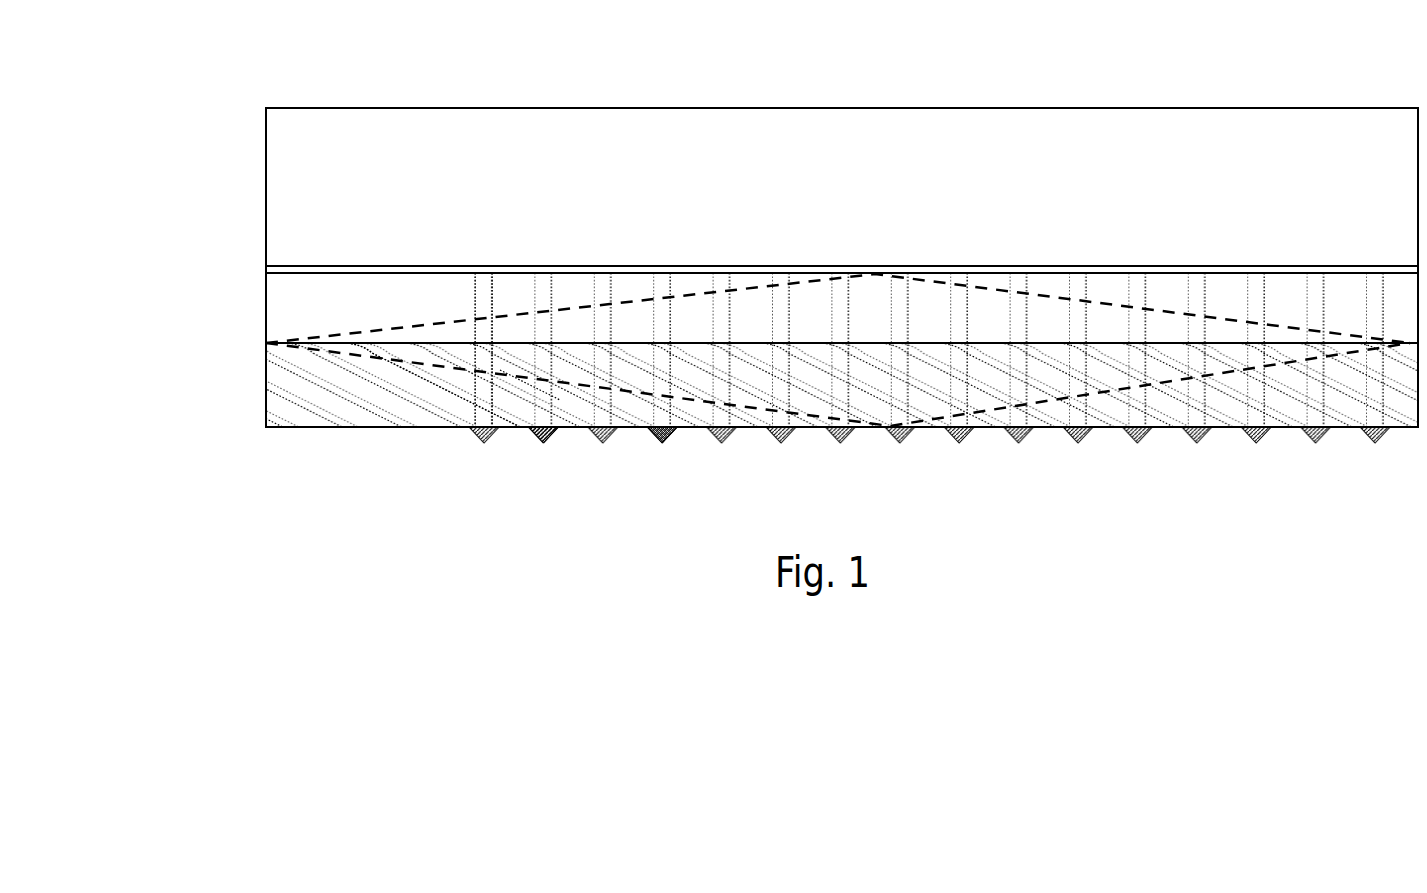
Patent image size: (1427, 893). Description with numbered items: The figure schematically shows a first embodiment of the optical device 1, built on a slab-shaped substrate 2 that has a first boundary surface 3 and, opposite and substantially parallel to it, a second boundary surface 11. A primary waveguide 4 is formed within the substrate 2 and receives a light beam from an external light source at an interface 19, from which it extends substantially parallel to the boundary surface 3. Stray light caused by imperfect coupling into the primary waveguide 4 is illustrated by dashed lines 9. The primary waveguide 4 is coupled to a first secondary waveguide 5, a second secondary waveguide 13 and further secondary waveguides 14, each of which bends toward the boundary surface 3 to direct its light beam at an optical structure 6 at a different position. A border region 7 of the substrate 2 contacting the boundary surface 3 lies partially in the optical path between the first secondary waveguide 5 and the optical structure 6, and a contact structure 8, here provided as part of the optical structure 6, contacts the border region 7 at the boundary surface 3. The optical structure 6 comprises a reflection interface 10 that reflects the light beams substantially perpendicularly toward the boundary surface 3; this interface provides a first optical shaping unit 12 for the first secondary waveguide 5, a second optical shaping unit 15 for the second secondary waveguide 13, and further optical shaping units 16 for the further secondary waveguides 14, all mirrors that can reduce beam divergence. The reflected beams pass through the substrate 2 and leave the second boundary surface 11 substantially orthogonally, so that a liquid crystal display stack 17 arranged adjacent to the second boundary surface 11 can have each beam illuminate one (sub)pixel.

The optical device 1 is at (968, 493).
The substrate 2 is at (298, 407).
The boundary surface 3 is at (327, 432).
The primary waveguide 4 is at (340, 343).
The first secondary waveguide 5 is at (427, 375).
The optical structure 6 is at (668, 437).
The border region 7 is at (532, 405).
The contact structure 8 is at (570, 430).
The dashed lines 9 is at (370, 358).
The reflection interface 10 is at (553, 442).
The second boundary surface 11 is at (828, 266).
The optical shaping unit 12 is at (547, 441).
The second secondary waveguide 13 is at (467, 370).
The further secondary waveguides 14 is at (753, 388).
The second optical shaping unit 15 is at (660, 444).
The further optical shaping units 16 is at (898, 445).
The liquid crystal display stack 17 is at (632, 190).
The interface 19 is at (267, 343).